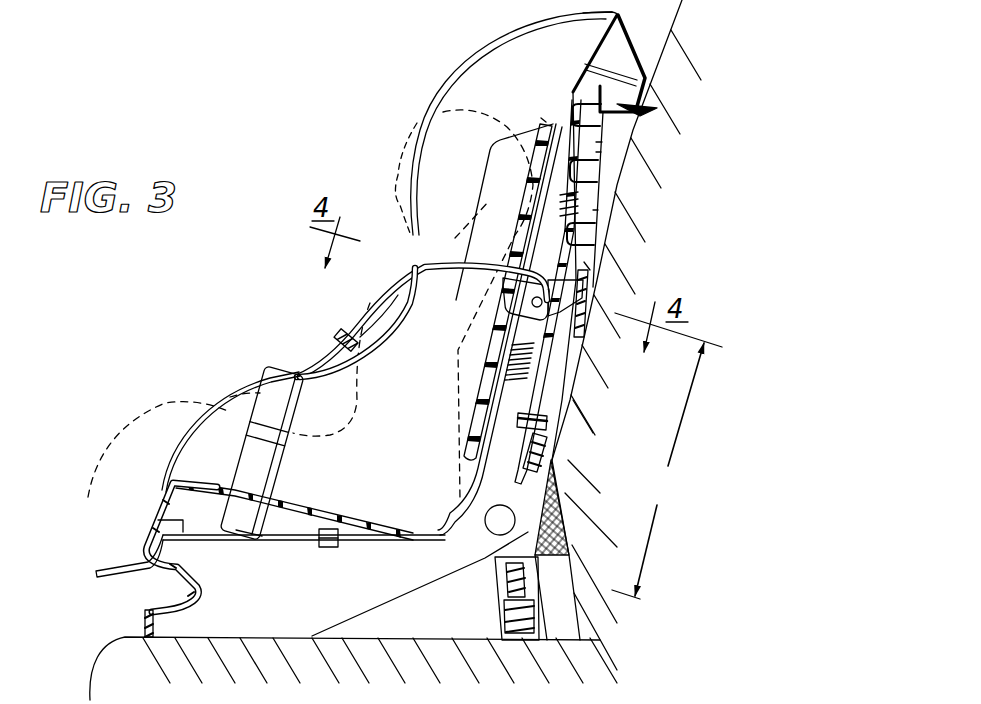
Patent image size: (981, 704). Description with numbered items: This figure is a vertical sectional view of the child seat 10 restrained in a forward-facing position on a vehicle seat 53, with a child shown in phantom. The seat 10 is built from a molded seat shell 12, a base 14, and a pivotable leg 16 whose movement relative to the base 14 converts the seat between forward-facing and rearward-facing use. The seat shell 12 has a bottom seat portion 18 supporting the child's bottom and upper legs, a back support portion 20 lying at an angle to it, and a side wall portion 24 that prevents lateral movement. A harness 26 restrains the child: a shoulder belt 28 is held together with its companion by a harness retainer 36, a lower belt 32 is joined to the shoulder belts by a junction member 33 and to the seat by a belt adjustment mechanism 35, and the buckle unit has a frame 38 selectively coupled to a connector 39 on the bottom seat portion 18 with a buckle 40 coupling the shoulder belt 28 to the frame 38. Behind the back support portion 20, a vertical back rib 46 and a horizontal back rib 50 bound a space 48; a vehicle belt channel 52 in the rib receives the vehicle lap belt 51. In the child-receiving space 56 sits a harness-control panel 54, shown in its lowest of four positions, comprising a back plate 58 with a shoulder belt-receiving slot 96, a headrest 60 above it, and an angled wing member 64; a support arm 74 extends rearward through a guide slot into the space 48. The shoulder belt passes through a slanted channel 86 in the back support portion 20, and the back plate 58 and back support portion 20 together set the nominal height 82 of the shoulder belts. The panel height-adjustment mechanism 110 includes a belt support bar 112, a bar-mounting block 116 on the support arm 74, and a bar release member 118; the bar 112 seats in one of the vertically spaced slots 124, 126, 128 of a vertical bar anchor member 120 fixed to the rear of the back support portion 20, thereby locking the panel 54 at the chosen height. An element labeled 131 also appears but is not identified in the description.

The seat 10 is at (648, 48).
The seat shell 12 is at (138, 498).
The base 14 is at (140, 609).
The pivotable leg 16 is at (490, 600).
The bottom seat portion 18 is at (334, 508).
The back support portion 20 is at (488, 438).
The second side wall portion 24 is at (214, 386).
The harness 26 is at (360, 303).
The first shoulder belt 28 is at (403, 288).
The lower belt 32 is at (100, 573).
The junction member 33 is at (331, 553).
The belt adjustment mechanism 35 is at (130, 546).
The harness retainer 36 is at (334, 327).
The frame 38 is at (285, 465).
The connector 39 is at (233, 484).
The buckle 40 is at (290, 366).
The second vertical back rib 46 is at (610, 153).
The space 48 is at (633, 217).
The horizontal back rib 50 is at (655, 107).
The vehicle lap belt 51 is at (556, 464).
The vehicle belt channel 52 is at (548, 423).
The vehicle seat 53 is at (198, 660).
The harness-control panel 54 is at (520, 104).
The child-receiving space 56 is at (497, 75).
The back plate 58 is at (484, 385).
The headrest 60 is at (545, 121).
The second wing member 64 is at (487, 185).
The second support arm 74 is at (584, 266).
The nominal height 82 is at (667, 456).
The second slanted channel 86 is at (583, 208).
The shoulder belt-receiving slot 96 is at (500, 275).
The panel height-adjustment mechanism 110 is at (594, 233).
The belt support bar 112 is at (575, 306).
The second bar-mounting block 116 is at (586, 331).
The bar release member 118 is at (592, 289).
The vertical bar anchor member 120 is at (660, 150).
The slot 124 is at (594, 251).
The slot 126 is at (604, 178).
The slot 128 is at (612, 132).
The attachment line 131 is at (580, 259).